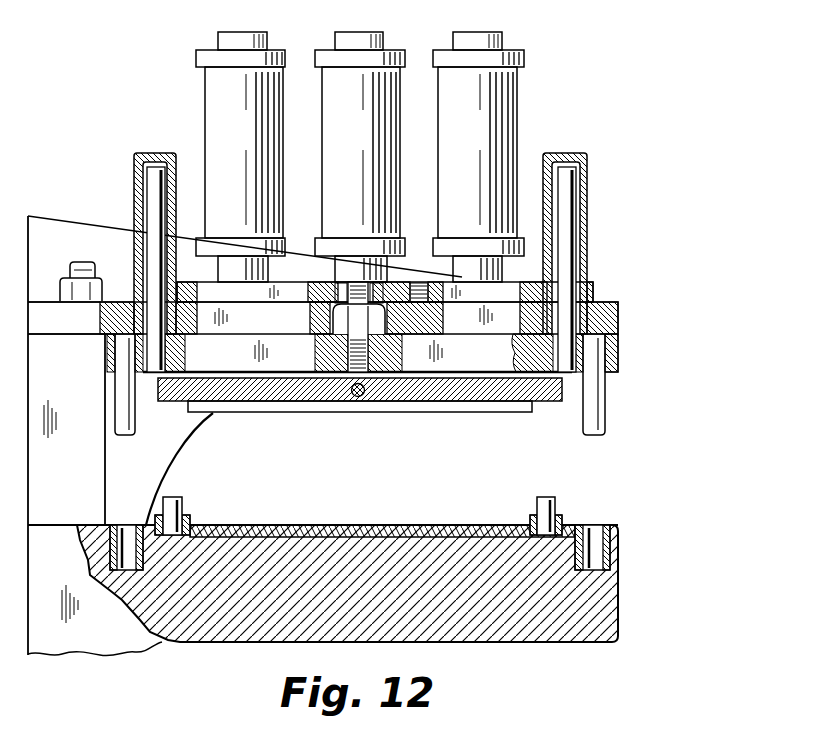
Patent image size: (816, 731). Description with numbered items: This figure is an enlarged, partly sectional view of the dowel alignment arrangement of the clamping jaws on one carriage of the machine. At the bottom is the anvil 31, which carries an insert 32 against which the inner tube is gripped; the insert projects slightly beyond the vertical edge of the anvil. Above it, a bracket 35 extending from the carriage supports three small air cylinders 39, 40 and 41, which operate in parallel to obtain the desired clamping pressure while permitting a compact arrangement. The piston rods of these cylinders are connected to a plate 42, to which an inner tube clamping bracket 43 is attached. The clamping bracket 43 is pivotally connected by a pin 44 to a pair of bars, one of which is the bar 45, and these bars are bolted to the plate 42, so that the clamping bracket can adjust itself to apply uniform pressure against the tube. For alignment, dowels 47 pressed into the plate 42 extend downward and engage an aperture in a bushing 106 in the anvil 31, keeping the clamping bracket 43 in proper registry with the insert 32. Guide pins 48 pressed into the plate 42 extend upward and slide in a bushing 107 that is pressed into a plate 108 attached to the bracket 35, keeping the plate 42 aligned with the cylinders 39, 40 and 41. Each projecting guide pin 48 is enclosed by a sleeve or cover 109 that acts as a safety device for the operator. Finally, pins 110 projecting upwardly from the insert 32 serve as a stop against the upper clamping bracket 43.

The anvil 31 is at (612, 622).
The insert 32 is at (283, 532).
The bracket 35 is at (55, 236).
The air cylinder 39 is at (218, 95).
The air cylinder 40 is at (332, 88).
The air cylinder 41 is at (450, 87).
The plate 42 is at (618, 358).
The inner tube clamping bracket 43 is at (510, 400).
The pin 44 is at (363, 397).
The bar 45 is at (431, 376).
The dowel 47 is at (594, 422).
The guide pin 48 is at (567, 192).
The bushing 106 is at (610, 548).
The bushing 107 is at (618, 322).
The plate 108 is at (602, 298).
The sleeve or cover 109 is at (585, 157).
The pin 110 is at (182, 497).